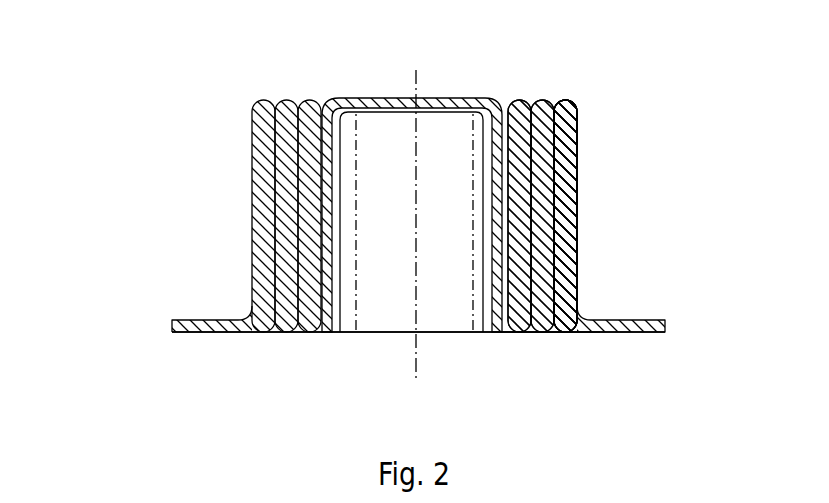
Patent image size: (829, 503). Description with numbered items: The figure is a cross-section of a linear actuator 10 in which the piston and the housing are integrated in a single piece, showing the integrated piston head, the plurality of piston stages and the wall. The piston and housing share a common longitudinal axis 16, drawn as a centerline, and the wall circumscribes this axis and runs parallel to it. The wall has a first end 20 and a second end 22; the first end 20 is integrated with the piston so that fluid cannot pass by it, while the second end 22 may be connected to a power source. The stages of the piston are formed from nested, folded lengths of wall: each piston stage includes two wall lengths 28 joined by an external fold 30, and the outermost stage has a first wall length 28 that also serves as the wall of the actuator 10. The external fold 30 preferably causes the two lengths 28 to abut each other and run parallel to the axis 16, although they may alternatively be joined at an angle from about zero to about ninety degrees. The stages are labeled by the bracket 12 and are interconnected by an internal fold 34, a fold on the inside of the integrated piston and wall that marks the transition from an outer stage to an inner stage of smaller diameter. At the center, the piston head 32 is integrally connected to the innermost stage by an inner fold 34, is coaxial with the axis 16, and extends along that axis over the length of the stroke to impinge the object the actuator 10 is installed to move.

The linear actuator 10 is at (175, 125).
The piston 12 is at (572, 45).
The longitudinal axis 16 is at (418, 353).
The first end 20 is at (591, 105).
The second end 22 is at (615, 298).
The wall length 28 is at (573, 218).
The external fold 30 is at (565, 98).
The piston head 32 is at (460, 98).
The internal fold 34 is at (556, 332).